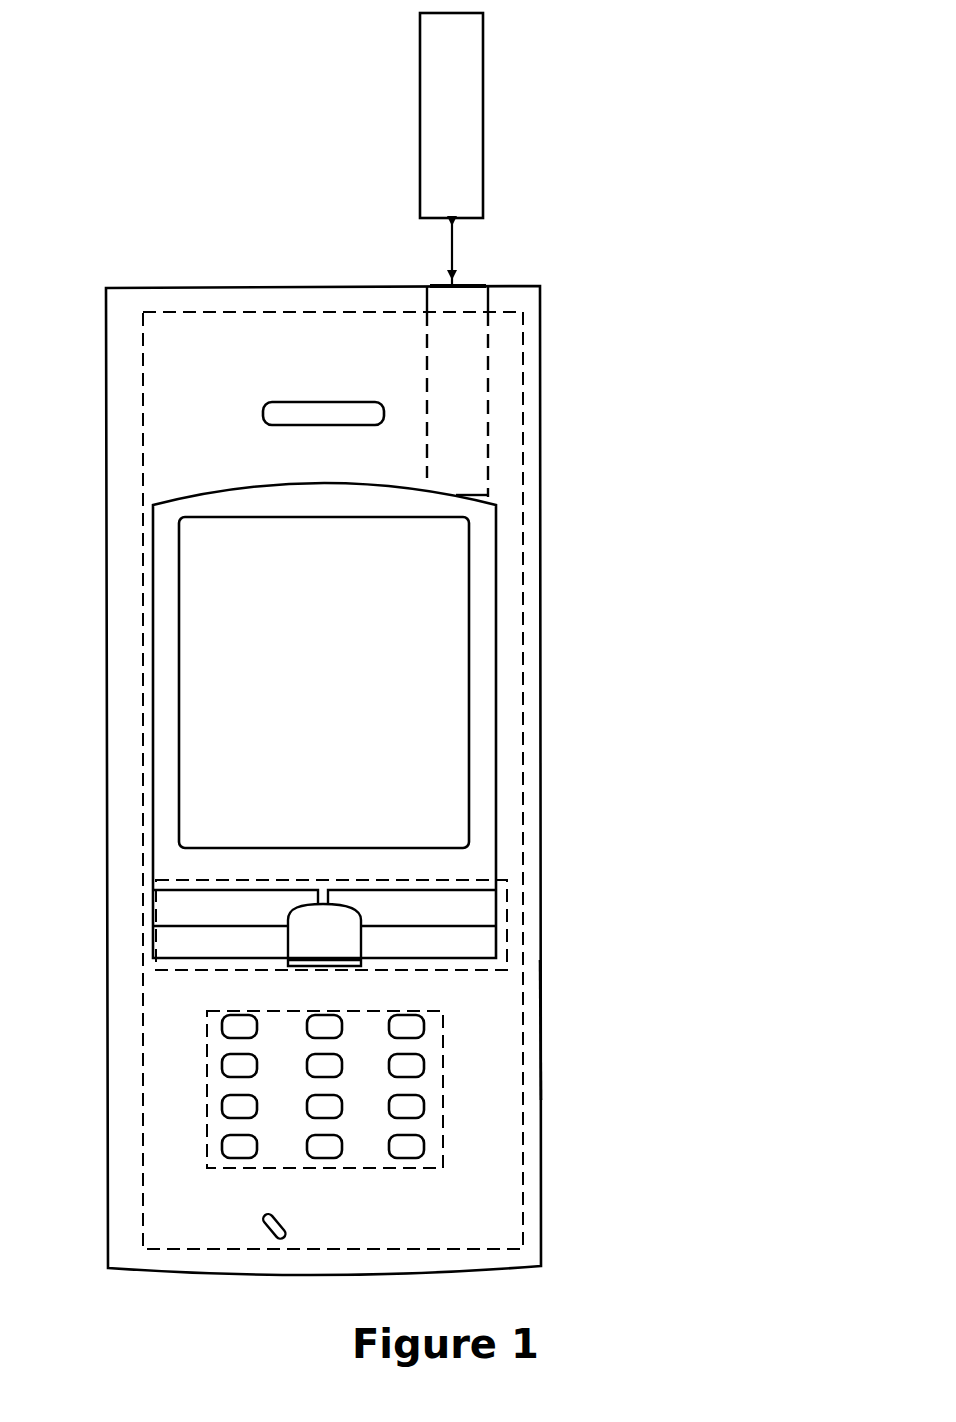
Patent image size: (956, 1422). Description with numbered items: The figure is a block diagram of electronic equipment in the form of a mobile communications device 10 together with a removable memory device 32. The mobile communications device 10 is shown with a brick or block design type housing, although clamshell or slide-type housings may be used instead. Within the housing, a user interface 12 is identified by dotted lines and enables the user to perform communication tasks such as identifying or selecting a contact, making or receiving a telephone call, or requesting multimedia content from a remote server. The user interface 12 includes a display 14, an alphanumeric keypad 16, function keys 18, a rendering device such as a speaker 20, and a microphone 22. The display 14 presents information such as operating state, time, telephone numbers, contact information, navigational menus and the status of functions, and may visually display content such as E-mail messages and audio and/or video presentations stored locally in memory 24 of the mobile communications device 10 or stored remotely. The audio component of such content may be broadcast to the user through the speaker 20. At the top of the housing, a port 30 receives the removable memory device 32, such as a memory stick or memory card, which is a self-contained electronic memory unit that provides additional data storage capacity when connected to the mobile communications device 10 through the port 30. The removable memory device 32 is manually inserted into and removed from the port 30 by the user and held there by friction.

The mobile communications device 10 is at (232, 252).
The user interface 12 is at (521, 511).
The display 14 is at (324, 720).
The alphanumeric keypad 16 is at (446, 1102).
The function keys 18 is at (506, 915).
The speaker 20 is at (350, 398).
The microphone 22 is at (289, 1228).
The memory 24 is at (543, 1027).
The port 30 is at (431, 288).
The removable memory device 32 is at (478, 68).